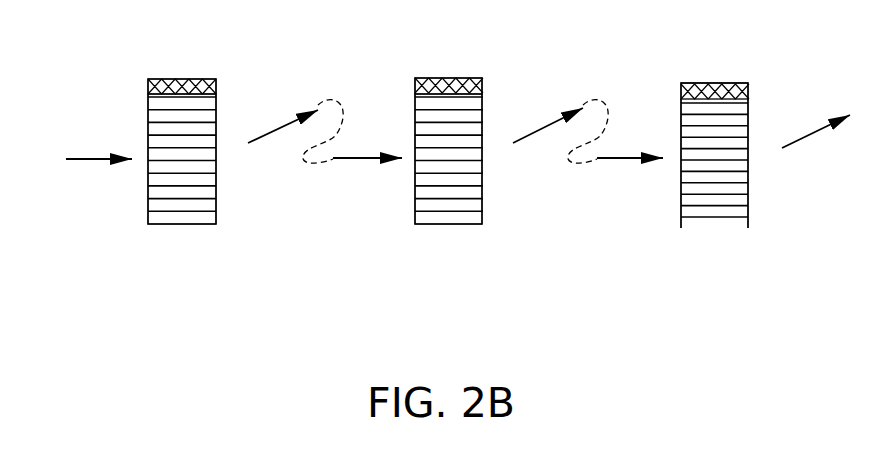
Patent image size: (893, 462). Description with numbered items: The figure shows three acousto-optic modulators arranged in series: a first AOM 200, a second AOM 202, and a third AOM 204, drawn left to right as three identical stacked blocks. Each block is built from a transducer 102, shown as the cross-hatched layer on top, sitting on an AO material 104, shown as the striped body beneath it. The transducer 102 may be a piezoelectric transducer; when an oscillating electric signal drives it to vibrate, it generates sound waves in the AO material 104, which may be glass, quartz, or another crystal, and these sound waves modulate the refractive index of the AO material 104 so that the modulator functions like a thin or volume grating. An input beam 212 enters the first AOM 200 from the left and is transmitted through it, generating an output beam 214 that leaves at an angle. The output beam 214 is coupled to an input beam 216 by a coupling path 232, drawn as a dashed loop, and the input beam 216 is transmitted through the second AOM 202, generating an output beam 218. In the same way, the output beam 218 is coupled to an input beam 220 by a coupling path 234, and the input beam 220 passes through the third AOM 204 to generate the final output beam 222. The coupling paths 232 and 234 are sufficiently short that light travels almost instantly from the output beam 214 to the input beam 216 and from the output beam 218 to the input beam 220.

The transducer 102 is at (185, 77).
The AO material 104 is at (217, 212).
The first AOM 200 is at (185, 228).
The second AOM 202 is at (450, 227).
The third AOM 204 is at (716, 231).
The input beam 212 is at (103, 161).
The output beam 214 is at (283, 125).
The input beam 216 is at (363, 160).
The output beam 218 is at (548, 125).
The input beam 220 is at (628, 160).
The output beam 222 is at (815, 131).
The coupling path 232 is at (340, 102).
The coupling path 234 is at (603, 102).